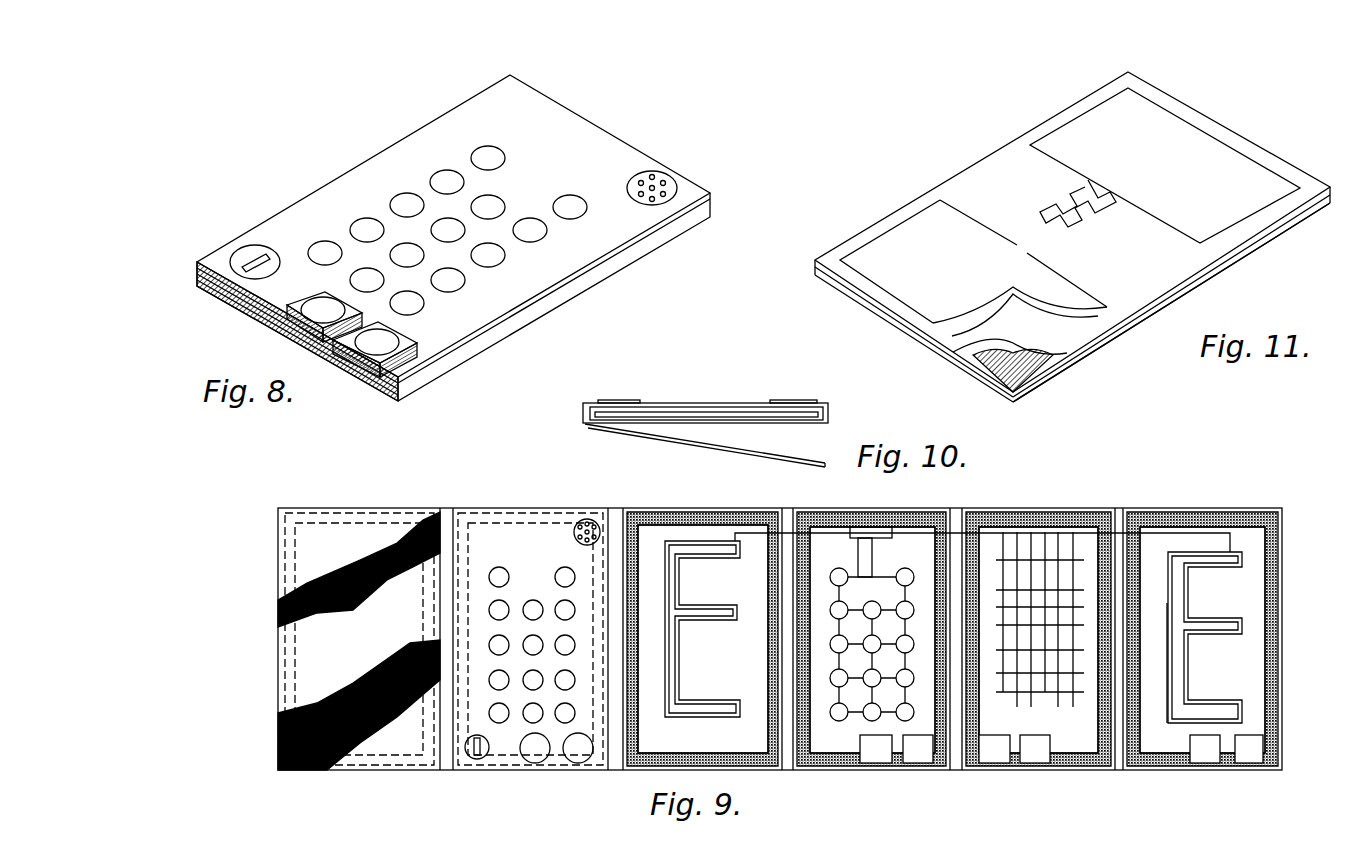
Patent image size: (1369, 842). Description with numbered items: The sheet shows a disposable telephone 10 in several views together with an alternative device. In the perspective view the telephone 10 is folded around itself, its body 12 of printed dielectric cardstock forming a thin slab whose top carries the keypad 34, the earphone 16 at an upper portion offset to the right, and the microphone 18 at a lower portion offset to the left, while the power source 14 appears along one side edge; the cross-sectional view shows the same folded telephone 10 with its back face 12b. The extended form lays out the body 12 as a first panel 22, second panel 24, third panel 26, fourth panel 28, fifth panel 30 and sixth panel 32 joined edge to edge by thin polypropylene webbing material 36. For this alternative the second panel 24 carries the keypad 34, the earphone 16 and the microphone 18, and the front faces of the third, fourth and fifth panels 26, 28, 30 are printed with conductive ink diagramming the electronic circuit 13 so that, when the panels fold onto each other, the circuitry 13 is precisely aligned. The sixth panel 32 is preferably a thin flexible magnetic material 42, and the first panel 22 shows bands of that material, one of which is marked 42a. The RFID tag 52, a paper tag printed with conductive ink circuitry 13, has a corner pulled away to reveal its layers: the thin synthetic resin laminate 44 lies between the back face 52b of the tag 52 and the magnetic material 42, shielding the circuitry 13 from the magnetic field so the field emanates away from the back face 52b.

In FIG. 8, the disposable telephone 10 is at (463, 238).
In FIG. 10, the disposable telephone 10 is at (702, 392).
In FIG. 9, the disposable telephone 10 is at (771, 642).
In FIG. 8, the body 12 is at (570, 258).
In FIG. 9, the body 12 is at (329, 623).
In FIG. 10, the back face 12b is at (612, 440).
In FIG. 11, the electronic circuit 13 is at (1045, 223).
In FIG. 8, the power source 14 is at (313, 313).
In FIG. 8, the earphone 16 is at (662, 178).
In FIG. 9, the earphone 16 is at (589, 519).
In FIG. 8, the microphone 18 is at (252, 257).
In FIG. 9, the microphone 18 is at (482, 758).
In FIG. 9, the first panel 22 is at (302, 675).
In FIG. 9, the second panel 24 is at (543, 641).
In FIG. 9, the third panel 26 is at (928, 621).
In FIG. 9, the fourth panel 28 is at (870, 622).
In FIG. 9, the fifth panel 30 is at (1038, 619).
In FIG. 9, the sixth panel 32 is at (1225, 656).
In FIG. 8, the keypad 34 is at (388, 190).
In FIG. 9, the keypad 34 is at (532, 585).
In FIG. 9, the webbing material 36 is at (446, 765).
In FIG. 11, the magnetic material 42 is at (1040, 378).
In FIG. 9, the magnetic material 42 is at (290, 600).
In FIG. 9, the adhesive strip 42a is at (280, 748).
In FIG. 11, the synthetic resin laminate 44 is at (973, 345).
In FIG. 11, the RFID tag 52 is at (992, 162).
In FIG. 11, the back face 52b is at (1110, 338).